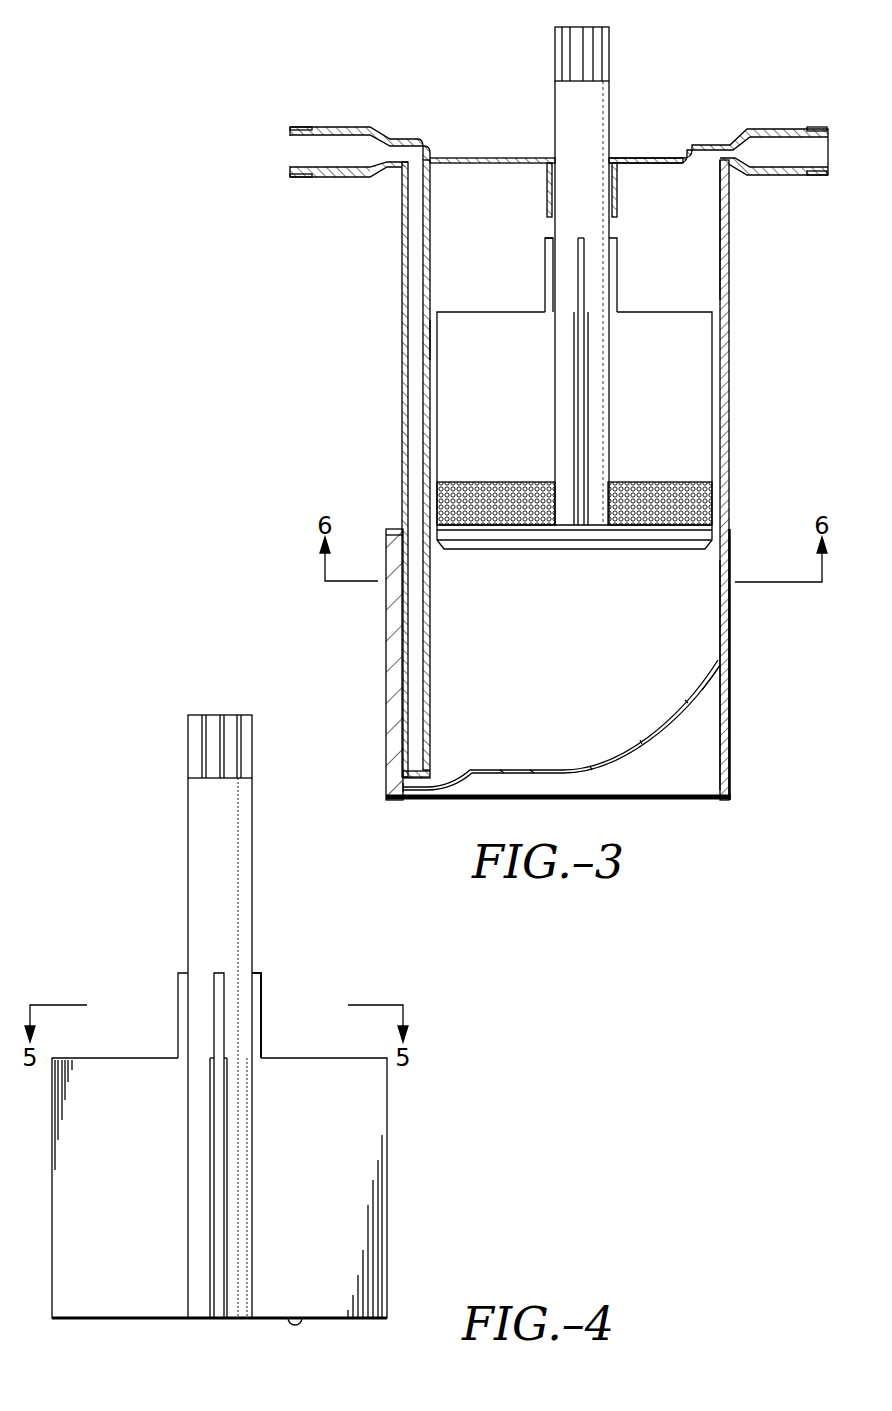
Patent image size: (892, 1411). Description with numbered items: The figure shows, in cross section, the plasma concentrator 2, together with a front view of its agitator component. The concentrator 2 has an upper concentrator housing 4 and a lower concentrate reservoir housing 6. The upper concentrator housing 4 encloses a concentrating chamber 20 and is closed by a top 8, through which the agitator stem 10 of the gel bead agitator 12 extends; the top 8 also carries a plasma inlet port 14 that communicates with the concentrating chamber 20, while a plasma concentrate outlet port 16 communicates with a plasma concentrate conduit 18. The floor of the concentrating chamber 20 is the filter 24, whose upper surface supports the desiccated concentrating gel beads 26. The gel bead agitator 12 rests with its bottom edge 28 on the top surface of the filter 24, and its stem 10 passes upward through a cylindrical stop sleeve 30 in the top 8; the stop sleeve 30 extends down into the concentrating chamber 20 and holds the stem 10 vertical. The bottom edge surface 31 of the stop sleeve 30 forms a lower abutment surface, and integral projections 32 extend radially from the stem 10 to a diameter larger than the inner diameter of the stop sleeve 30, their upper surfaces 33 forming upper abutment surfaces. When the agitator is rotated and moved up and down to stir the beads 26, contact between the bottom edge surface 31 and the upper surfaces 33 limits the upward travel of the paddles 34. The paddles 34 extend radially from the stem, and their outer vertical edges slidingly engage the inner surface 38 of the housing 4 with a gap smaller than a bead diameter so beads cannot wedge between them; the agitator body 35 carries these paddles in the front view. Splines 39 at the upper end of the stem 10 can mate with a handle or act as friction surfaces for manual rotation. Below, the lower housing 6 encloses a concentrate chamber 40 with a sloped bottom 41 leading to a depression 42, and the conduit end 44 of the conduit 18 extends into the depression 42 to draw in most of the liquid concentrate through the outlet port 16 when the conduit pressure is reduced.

In FIG. 3, the concentrator 2 is at (557, 413).
In FIG. 3, the upper concentrator housing 4 is at (555, 437).
In FIG. 3, the lower concentrate reservoir housing 6 is at (563, 664).
In FIG. 3, the top 8 is at (488, 158).
In FIG. 3, the agitator stem 10 is at (613, 276).
In FIG. 4, the agitator stem 10 is at (255, 860).
In FIG. 3, the gel bead agitator 12 is at (565, 384).
In FIG. 4, the gel bead agitator 12 is at (270, 1020).
In FIG. 3, the plasma inlet port 14 is at (814, 127).
In FIG. 3, the plasma concentrate outlet port 16 is at (300, 126).
In FIG. 3, the plasma concentrate conduit 18 is at (403, 290).
In FIG. 3, the concentrating chamber 20 is at (702, 205).
In FIG. 3, the filter 24 is at (712, 535).
In FIG. 3, the concentrating gel beads 26 is at (712, 495).
In FIG. 4, the bottom edge 28 is at (296, 1316).
In FIG. 3, the stop sleeve 30 is at (617, 196).
In FIG. 3, the bottom edge surface 31 is at (547, 213).
In FIG. 3, the projections 32 is at (604, 265).
In FIG. 4, the projections 32 is at (263, 1006).
In FIG. 3, the upper surfaces 33 is at (612, 240).
In FIG. 3, the paddles 34 is at (535, 311).
In FIG. 4, the paddles 34 is at (223, 1200).
In FIG. 3, the cartridge shell 35 is at (434, 365).
In FIG. 4, the cartridge shell 35 is at (388, 1232).
In FIG. 3, the inner surface 38 is at (430, 340).
In FIG. 3, the splines 39 is at (609, 52).
In FIG. 3, the concentrate chamber 40 is at (705, 615).
In FIG. 3, the sloped bottom 41 is at (718, 665).
In FIG. 3, the depression 42 is at (430, 775).
In FIG. 3, the conduit end 44 is at (402, 784).